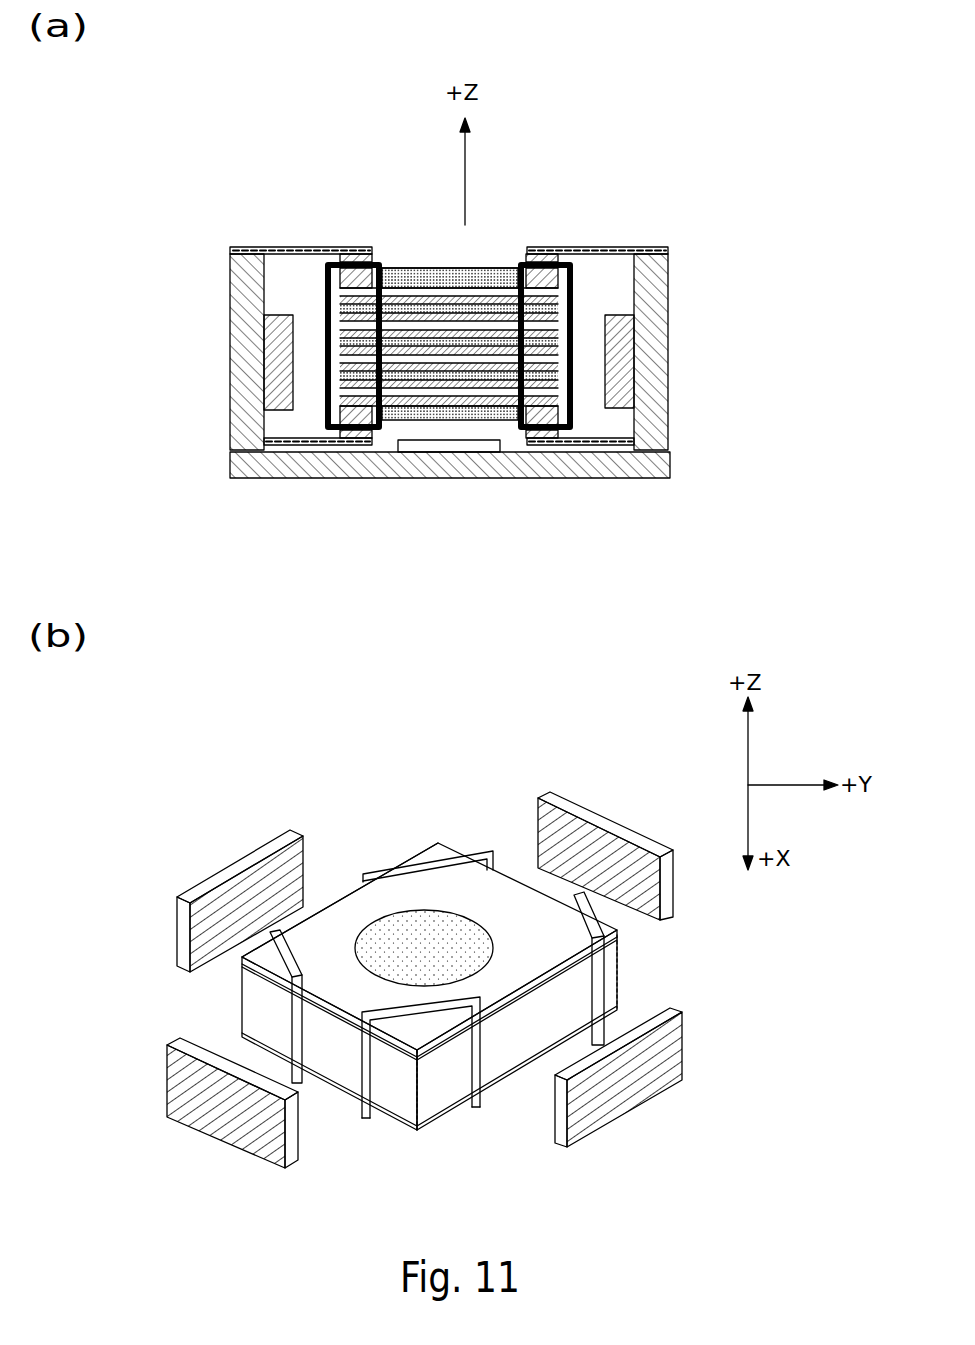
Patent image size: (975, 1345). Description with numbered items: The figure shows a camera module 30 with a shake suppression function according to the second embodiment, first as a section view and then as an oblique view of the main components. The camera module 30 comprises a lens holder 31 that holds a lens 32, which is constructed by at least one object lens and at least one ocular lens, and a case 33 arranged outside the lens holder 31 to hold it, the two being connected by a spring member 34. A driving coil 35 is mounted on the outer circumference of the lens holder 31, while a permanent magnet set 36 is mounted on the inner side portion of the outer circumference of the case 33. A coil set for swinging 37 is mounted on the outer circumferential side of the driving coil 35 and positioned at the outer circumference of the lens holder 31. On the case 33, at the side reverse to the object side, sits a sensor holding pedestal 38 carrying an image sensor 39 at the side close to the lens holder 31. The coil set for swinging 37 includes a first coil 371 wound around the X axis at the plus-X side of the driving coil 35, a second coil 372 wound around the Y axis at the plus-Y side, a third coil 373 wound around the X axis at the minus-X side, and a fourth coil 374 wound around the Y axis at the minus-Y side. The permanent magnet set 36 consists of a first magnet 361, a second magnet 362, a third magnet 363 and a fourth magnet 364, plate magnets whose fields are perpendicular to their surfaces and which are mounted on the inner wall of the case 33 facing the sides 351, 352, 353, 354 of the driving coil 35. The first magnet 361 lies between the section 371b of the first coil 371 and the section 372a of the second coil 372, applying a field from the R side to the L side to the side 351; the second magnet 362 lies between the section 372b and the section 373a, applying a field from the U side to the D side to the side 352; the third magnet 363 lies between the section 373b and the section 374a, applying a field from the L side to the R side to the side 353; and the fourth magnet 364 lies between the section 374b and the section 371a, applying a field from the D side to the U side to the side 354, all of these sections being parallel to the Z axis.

The camera module 30 is at (430, 250).
The lens holder 31 is at (575, 267).
The lens 32 is at (485, 268).
The case 33 is at (663, 328).
The spring member 34 is at (255, 250).
The driving coil 35 is at (575, 292).
The permanent magnet set 36 is at (275, 335).
The coil set for swinging 37 is at (330, 262).
The sensor holding pedestal 38 is at (516, 455).
The image sensor 39 is at (433, 452).
The side of the driving coil 351 is at (503, 1025).
The side of the driving coil 352 is at (497, 872).
The side of the driving coil 353 is at (347, 883).
The side of the driving coil 354 is at (337, 1050).
The first magnet 361 is at (665, 1070).
The second magnet 362 is at (583, 812).
The third magnet 363 is at (177, 905).
The fourth magnet 364 is at (205, 1118).
The first coil 371 is at (372, 1062).
The section of the first coil 371a is at (365, 1062).
The section of the first coil 371b is at (477, 1043).
The second coil 372 is at (600, 958).
The section of the second coil 372a is at (603, 990).
The section of the second coil 372b is at (578, 892).
The third coil 373 is at (370, 872).
The section of the third coil 373a is at (491, 853).
The section of the third coil 373b is at (365, 875).
The fourth coil 374 is at (292, 1015).
The section of the fourth coil 374a is at (268, 930).
The section of the fourth coil 374b is at (300, 1073).